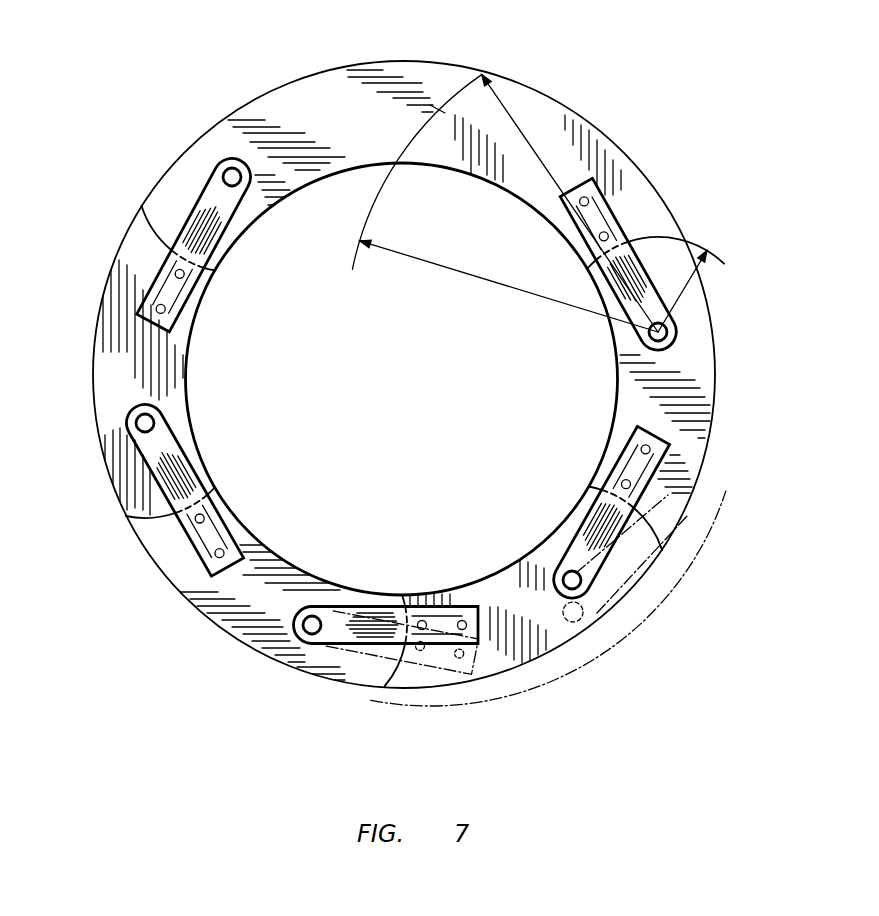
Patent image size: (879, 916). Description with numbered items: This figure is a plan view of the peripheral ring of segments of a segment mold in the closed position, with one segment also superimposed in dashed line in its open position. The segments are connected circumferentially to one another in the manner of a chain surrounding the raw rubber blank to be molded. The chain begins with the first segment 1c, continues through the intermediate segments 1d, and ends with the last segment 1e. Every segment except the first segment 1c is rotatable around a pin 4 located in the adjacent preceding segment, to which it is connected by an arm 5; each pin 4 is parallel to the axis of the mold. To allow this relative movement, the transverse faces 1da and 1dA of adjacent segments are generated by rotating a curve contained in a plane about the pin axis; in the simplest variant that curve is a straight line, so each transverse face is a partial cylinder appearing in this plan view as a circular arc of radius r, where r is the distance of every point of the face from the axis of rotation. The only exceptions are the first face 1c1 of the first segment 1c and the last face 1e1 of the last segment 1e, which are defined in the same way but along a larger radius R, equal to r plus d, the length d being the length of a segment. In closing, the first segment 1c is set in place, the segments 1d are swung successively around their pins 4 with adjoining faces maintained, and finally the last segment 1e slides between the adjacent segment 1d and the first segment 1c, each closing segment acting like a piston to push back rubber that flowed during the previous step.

The first segment 1c is at (290, 108).
The last segment 1e is at (590, 147).
The first face 1c1 is at (430, 127).
The last face 1e1 is at (437, 100).
The segment 1d is at (113, 376).
The transverse face 1da is at (653, 509).
The transverse face 1dA is at (650, 557).
The pin 4 is at (567, 565).
The arm 5 is at (570, 512).
The length of the segment d is at (570, 203).
The radius R is at (509, 286).
The radius r is at (682, 291).